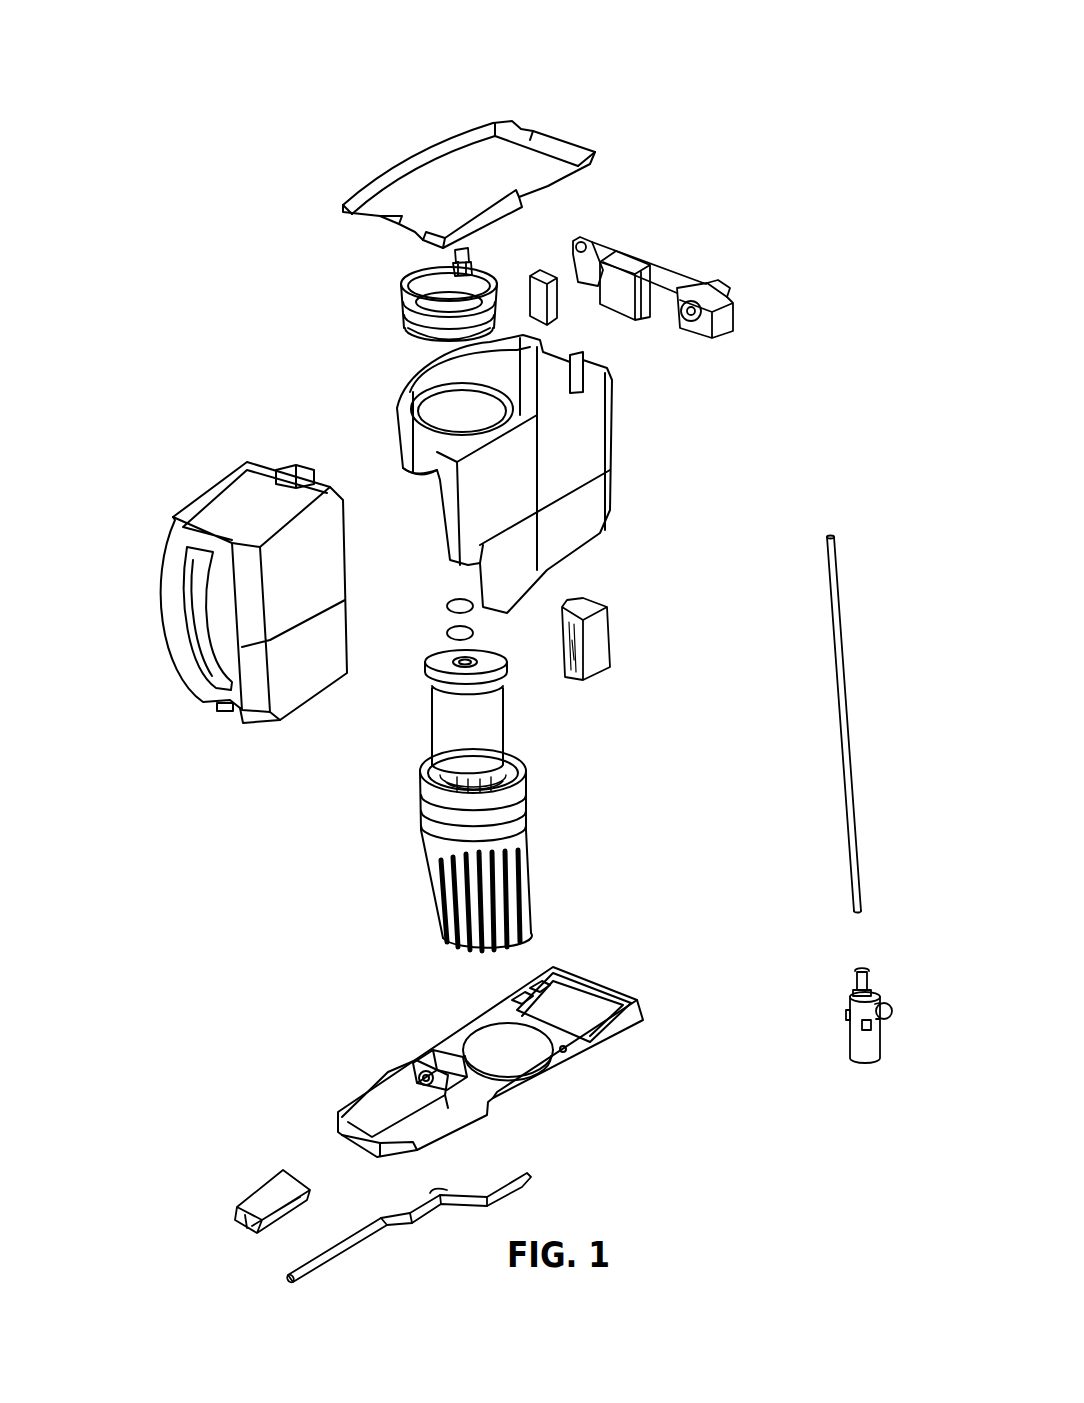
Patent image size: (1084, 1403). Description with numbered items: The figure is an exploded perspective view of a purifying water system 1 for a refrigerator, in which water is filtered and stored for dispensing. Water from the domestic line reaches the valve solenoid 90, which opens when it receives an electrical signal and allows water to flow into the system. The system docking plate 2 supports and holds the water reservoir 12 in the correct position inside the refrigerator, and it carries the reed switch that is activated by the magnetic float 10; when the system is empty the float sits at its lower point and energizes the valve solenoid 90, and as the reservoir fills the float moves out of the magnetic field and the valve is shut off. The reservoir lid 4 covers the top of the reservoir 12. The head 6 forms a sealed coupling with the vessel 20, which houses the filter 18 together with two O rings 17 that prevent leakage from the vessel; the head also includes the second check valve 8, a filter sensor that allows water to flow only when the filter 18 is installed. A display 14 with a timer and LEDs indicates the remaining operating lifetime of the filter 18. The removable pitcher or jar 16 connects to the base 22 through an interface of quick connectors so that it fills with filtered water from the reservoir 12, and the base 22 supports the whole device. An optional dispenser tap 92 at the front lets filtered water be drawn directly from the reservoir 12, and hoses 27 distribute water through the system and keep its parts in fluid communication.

The purifying water system 1 is at (760, 29).
The system docking plate 2 is at (715, 267).
The reservoir lid 4 is at (427, 160).
The head 6 is at (385, 272).
The second check valve (filter sensor) 8 is at (470, 248).
The magnetic float 10 is at (562, 298).
The water reservoir 12 is at (590, 455).
The display 14 is at (628, 645).
The removable pitcher or jar 16 is at (188, 468).
The O rings 17 is at (447, 632).
The filter 18 is at (497, 703).
The vessel 20 is at (527, 830).
The base 22 is at (585, 1085).
The hoses 27 is at (850, 895).
The valve solenoid 90 is at (885, 1045).
The dispenser water valve or tap 92 is at (257, 1190).